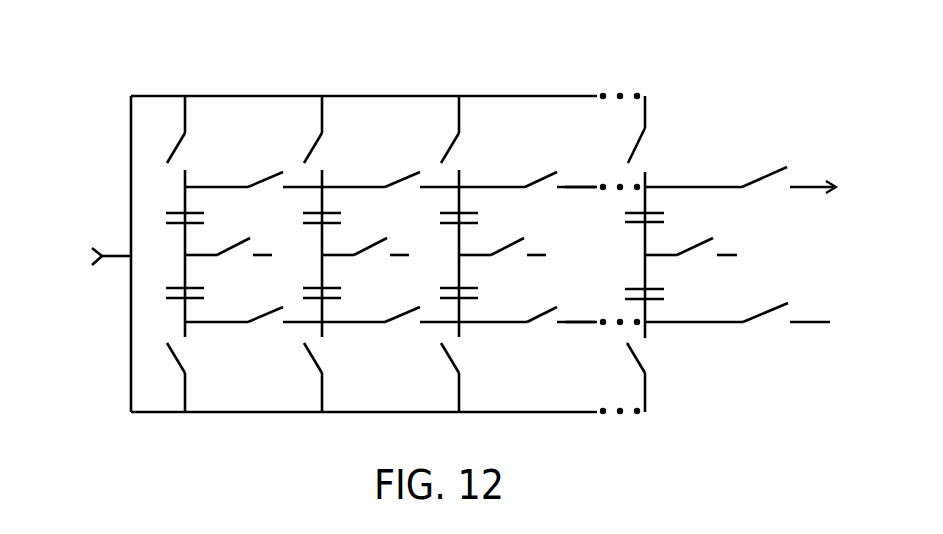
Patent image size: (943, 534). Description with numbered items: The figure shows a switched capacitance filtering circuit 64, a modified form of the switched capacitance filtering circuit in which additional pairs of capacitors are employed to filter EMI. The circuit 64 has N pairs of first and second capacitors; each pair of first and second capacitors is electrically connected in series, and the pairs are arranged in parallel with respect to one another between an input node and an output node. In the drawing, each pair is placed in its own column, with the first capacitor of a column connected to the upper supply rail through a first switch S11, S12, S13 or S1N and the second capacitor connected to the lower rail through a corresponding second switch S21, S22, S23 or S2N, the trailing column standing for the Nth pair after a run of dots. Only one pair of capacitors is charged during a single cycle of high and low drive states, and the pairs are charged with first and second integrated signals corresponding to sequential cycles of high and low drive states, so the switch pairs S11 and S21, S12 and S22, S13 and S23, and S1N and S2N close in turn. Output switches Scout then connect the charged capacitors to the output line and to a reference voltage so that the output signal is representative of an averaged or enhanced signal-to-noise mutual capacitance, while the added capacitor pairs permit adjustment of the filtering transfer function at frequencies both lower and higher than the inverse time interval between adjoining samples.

The switched capacitance filtering circuit 64 is at (467, 207).
The switch S11 is at (192, 134).
The switch S12 is at (329, 134).
The switch S13 is at (465, 134).
The switch S1N is at (654, 133).
The switch S21 is at (192, 377).
The switch S22 is at (329, 377).
The switch S23 is at (465, 377).
The switch S2N is at (636, 377).
The output switch Scout is at (253, 166).